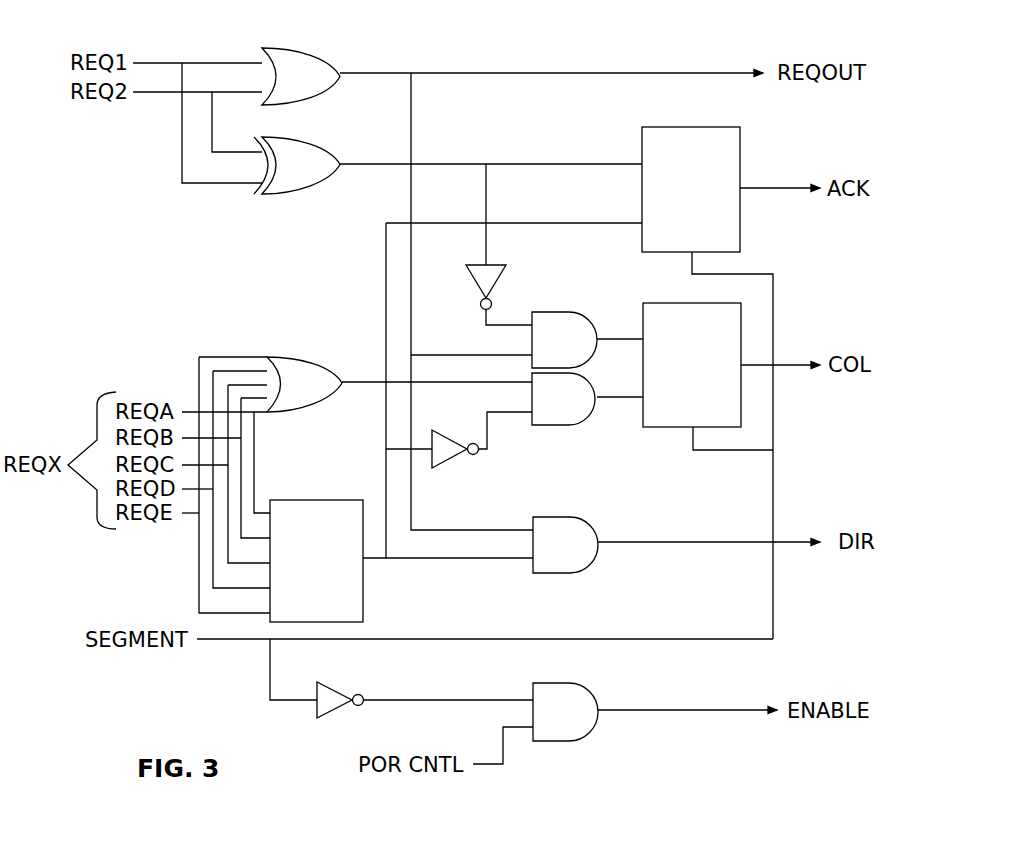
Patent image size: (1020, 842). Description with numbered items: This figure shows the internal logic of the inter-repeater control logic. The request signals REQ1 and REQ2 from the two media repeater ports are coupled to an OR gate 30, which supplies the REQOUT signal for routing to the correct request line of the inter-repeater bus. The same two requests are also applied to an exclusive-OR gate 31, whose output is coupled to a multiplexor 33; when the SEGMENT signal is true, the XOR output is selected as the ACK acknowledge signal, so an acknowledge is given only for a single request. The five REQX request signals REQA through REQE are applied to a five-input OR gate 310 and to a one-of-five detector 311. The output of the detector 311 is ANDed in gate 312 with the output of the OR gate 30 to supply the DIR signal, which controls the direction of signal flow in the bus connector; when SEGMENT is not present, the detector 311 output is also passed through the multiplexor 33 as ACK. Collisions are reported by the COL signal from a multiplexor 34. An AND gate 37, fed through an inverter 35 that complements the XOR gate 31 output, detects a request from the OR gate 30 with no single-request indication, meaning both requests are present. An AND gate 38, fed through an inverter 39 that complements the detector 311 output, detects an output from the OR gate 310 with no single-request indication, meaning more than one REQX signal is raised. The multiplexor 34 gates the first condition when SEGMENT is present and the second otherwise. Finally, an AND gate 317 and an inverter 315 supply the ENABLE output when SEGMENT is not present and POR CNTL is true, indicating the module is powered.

The OR gate 30 is at (300, 49).
The exclusive-OR (XOR) gate 31 is at (300, 138).
The multiplexor 33 is at (680, 127).
The multiplexor 34 is at (681, 303).
The inverter 35 is at (494, 285).
The AND gate 37 is at (573, 351).
The AND gate 38 is at (573, 409).
The inverter 39 is at (456, 440).
The five-input OR gate 310 is at (300, 357).
The 1-of-5 detector 311 is at (300, 502).
The AND gate 312 is at (546, 517).
The inverter 315 is at (345, 684).
The AND gate 317 is at (548, 683).